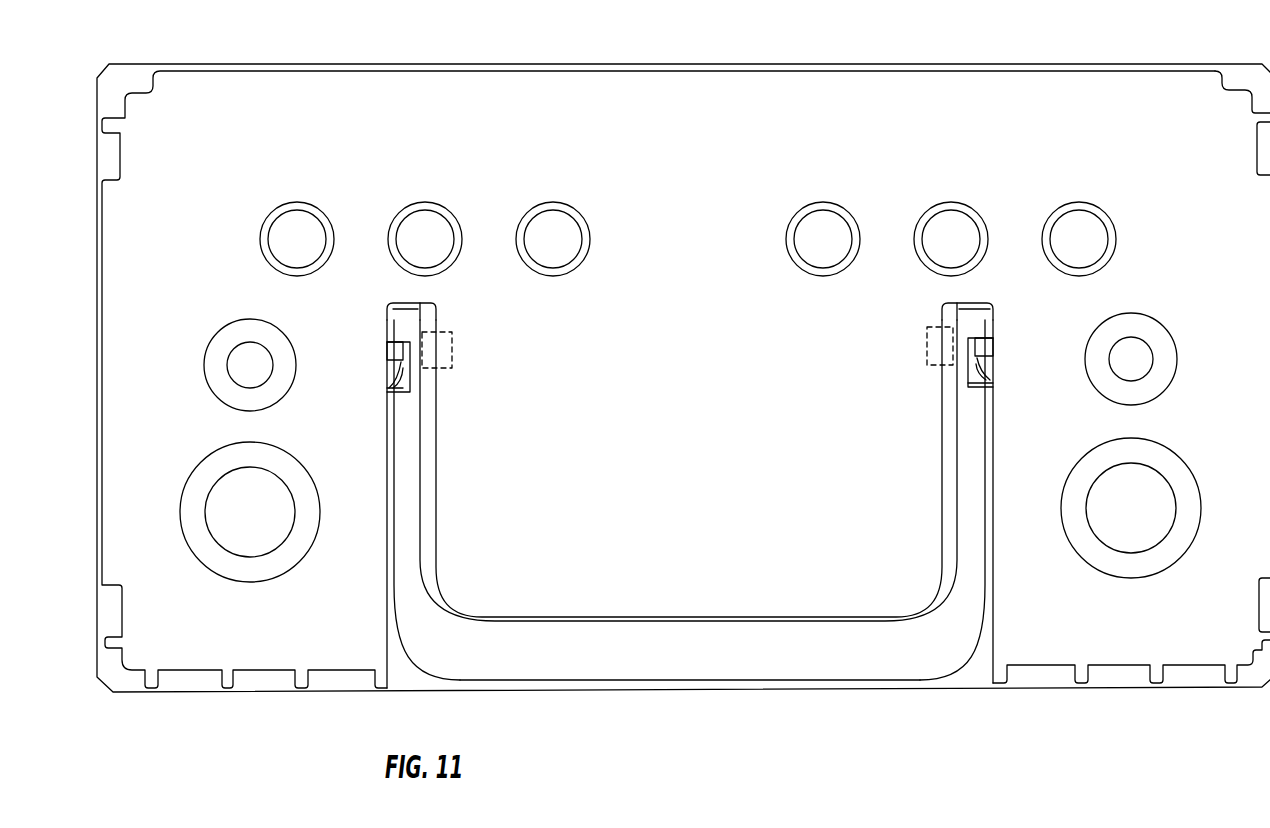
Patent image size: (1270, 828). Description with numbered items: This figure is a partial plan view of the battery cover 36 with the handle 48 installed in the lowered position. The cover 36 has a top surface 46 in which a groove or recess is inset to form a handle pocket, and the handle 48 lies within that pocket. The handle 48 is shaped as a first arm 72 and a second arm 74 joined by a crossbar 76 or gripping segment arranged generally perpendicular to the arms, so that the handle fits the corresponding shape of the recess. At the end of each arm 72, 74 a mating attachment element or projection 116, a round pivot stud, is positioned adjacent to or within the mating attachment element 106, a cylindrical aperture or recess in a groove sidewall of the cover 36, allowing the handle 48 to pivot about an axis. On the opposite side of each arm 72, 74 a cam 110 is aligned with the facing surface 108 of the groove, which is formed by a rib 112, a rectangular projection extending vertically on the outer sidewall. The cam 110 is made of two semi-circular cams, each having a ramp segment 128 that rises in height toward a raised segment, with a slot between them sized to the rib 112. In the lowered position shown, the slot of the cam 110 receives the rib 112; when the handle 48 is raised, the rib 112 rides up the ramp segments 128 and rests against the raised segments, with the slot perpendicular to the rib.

The battery cover 36 is at (712, 125).
The top surface 46 is at (679, 451).
The handle 48 is at (693, 532).
The first arm 72 is at (970, 471).
The second arm 74 is at (405, 513).
The crossbar 76 is at (763, 658).
The mating attachment element 106 is at (453, 353).
The facing surface 108 is at (383, 372).
The cam 110 is at (403, 303).
The rib 112 is at (392, 352).
The projection 116 is at (432, 303).
The ramp segment 128 is at (385, 392).